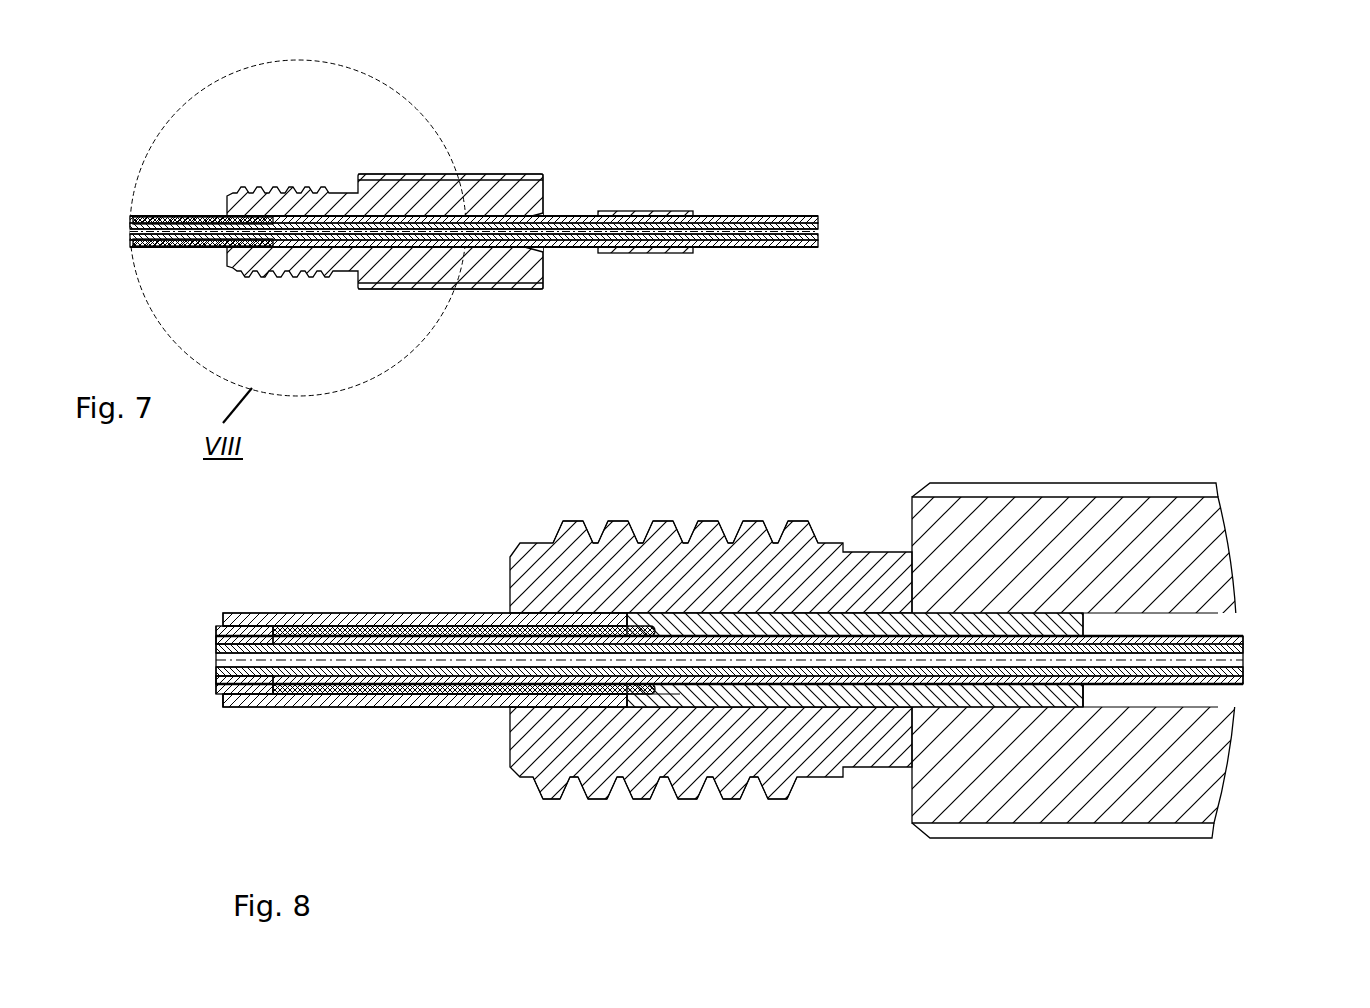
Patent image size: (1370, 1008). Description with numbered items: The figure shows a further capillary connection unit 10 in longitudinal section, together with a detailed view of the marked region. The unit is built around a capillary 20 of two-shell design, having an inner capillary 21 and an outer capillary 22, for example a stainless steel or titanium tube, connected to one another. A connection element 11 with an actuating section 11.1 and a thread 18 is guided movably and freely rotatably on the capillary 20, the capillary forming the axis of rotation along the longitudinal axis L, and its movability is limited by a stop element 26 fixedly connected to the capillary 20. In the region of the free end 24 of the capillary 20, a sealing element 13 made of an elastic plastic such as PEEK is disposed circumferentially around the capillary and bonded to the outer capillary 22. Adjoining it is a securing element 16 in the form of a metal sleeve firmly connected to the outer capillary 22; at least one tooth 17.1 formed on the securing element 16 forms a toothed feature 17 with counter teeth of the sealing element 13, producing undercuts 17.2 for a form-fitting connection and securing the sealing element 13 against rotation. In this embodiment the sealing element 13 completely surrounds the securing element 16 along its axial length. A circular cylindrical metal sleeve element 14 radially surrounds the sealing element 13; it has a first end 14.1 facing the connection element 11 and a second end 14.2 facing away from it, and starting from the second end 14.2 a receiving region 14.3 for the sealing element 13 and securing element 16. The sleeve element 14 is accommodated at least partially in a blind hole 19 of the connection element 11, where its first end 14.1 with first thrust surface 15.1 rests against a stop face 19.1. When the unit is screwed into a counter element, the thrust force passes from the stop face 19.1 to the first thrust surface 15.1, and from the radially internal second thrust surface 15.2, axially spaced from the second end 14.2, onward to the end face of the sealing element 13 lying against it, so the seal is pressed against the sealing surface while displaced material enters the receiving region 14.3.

In FIG. 7, the capillary connection unit 10 is at (514, 72).
In FIG. 8, the capillary connection unit 10 is at (1194, 329).
In FIG. 7, the connection element 11 is at (532, 176).
In FIG. 8, the connection element 11 is at (1032, 483).
In FIG. 7, the actuating section 11.1 is at (363, 297).
In FIG. 8, the sealing element 13 is at (245, 628).
In FIG. 8, the sleeve element 14 is at (943, 616).
In FIG. 8, the first end 14.1 is at (1082, 703).
In FIG. 8, the second end 14.2 is at (217, 710).
In FIG. 8, the receiving region 14.3 is at (405, 708).
In FIG. 8, the first thrust surface 15.1 is at (1106, 706).
In FIG. 8, the second thrust surface 15.2 is at (664, 698).
In FIG. 8, the securing element 16 is at (478, 630).
In FIG. 8, the toothed feature 17 is at (452, 718).
In FIG. 8, the tooth 17.1 is at (427, 628).
In FIG. 8, the undercuts 17.2 is at (448, 628).
In FIG. 8, the thread 18 is at (800, 521).
In FIG. 8, the blind hole 19 is at (934, 717).
In FIG. 8, the stop face 19.1 is at (1096, 630).
In FIG. 7, the capillary 20 is at (753, 216).
In FIG. 8, the capillary 20 is at (1213, 636).
In FIG. 8, the inner capillary 21 is at (1243, 652).
In FIG. 8, the outer capillary 22 is at (1243, 640).
In FIG. 8, the free end 24 is at (213, 650).
In FIG. 7, the stop element 26 is at (655, 212).
In FIG. 8, the longitudinal axis L is at (315, 657).